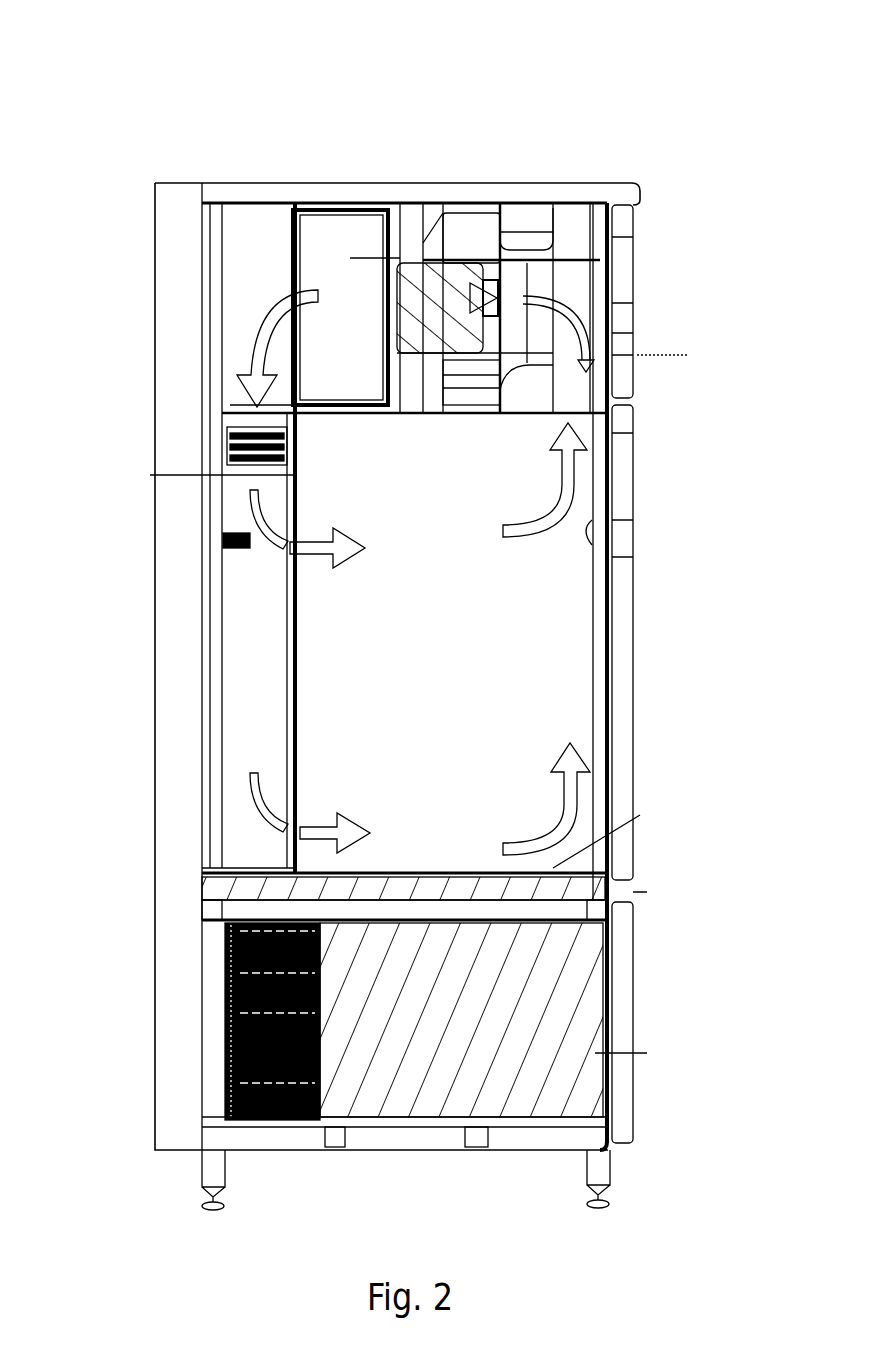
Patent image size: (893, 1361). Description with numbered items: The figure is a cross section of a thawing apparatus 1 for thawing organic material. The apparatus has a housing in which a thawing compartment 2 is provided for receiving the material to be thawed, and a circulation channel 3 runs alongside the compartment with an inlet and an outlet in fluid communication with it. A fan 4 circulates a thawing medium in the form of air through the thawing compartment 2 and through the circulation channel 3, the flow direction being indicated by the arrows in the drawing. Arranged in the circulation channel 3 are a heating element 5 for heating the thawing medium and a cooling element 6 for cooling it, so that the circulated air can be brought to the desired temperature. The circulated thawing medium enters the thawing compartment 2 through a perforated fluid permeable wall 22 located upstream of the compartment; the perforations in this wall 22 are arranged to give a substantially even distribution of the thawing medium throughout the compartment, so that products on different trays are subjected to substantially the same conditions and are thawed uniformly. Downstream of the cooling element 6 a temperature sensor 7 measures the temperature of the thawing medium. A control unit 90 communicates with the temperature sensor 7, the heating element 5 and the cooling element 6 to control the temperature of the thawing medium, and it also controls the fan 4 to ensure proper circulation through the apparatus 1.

The thawing apparatus 1 is at (140, 98).
The thawing compartment 2 is at (513, 655).
The circulation channel 3 is at (237, 290).
The fan 4 is at (593, 302).
The heating element 5 is at (637, 247).
The cooling element 6 is at (240, 468).
The temperature sensor 7 is at (223, 540).
The perforated fluid permeable wall 22 is at (313, 657).
The control unit 90 is at (523, 220).